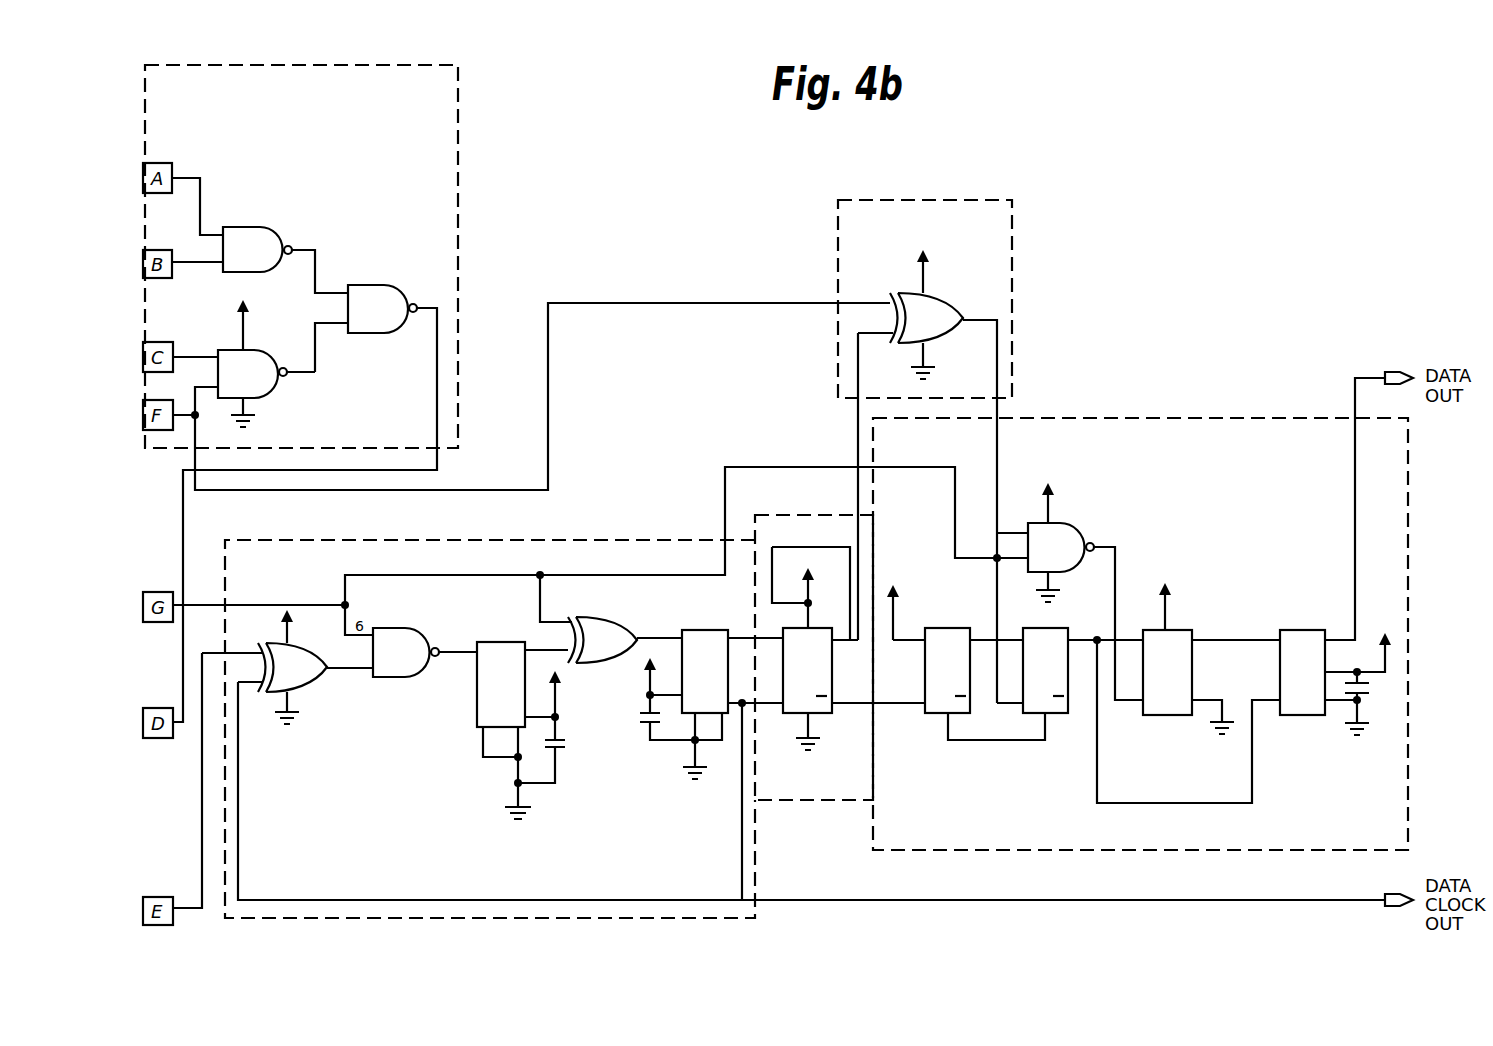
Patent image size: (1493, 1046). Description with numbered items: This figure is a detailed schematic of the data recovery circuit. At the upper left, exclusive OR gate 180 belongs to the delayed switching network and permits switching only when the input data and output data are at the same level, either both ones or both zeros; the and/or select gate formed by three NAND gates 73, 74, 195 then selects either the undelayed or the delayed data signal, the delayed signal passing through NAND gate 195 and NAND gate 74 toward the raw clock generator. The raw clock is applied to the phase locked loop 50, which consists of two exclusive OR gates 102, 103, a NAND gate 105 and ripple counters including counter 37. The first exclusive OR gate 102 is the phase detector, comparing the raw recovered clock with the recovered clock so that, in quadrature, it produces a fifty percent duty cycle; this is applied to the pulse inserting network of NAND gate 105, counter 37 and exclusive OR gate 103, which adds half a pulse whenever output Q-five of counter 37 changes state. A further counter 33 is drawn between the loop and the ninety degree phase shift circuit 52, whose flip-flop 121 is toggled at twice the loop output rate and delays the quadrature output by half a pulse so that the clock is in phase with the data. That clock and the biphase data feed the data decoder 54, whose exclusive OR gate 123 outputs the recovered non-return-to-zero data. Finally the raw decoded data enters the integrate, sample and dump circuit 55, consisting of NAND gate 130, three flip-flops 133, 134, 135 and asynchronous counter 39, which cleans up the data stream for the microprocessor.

The exclusive OR gate 180 is at (370, 240).
The NAND gate 73 is at (255, 227).
The NAND gate 74 is at (373, 285).
The NAND gate 195 is at (272, 392).
The data decoder 54 is at (1012, 200).
The exclusive OR gate 123 is at (940, 300).
The integrate, sample and dump circuit 55 is at (1237, 418).
The phase locked loop 50 is at (262, 540).
The exclusive OR gate 102 is at (313, 686).
The NAND gate 105 is at (420, 628).
The counter 37 is at (477, 705).
The exclusive OR gate 103 is at (603, 617).
The counter 33 is at (712, 630).
The 90° phase shift circuit 52 is at (830, 800).
The flip-flop 121 is at (826, 715).
The flip-flop 133 is at (932, 715).
The flip-flop 134 is at (1062, 715).
The NAND gate 130 is at (1085, 523).
The asynchronous counter 39 is at (1153, 715).
The flip-flop 135 is at (1305, 715).